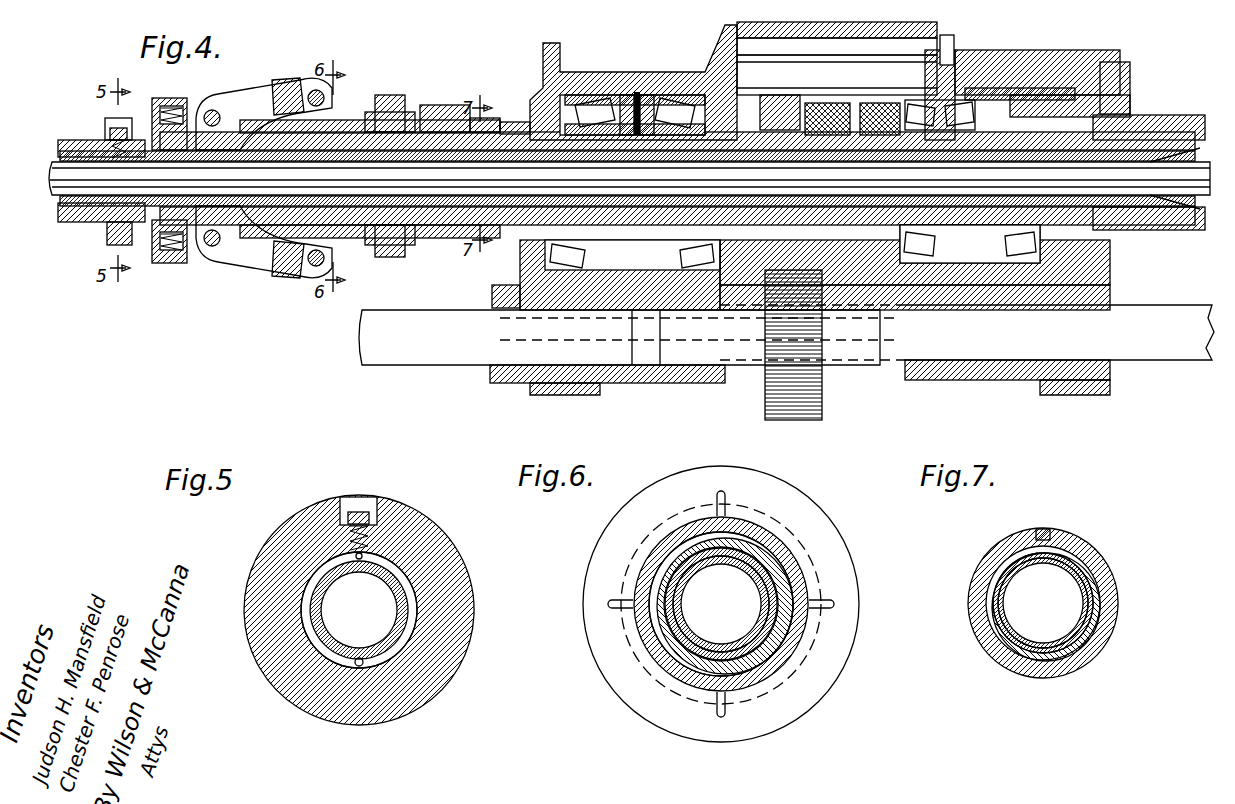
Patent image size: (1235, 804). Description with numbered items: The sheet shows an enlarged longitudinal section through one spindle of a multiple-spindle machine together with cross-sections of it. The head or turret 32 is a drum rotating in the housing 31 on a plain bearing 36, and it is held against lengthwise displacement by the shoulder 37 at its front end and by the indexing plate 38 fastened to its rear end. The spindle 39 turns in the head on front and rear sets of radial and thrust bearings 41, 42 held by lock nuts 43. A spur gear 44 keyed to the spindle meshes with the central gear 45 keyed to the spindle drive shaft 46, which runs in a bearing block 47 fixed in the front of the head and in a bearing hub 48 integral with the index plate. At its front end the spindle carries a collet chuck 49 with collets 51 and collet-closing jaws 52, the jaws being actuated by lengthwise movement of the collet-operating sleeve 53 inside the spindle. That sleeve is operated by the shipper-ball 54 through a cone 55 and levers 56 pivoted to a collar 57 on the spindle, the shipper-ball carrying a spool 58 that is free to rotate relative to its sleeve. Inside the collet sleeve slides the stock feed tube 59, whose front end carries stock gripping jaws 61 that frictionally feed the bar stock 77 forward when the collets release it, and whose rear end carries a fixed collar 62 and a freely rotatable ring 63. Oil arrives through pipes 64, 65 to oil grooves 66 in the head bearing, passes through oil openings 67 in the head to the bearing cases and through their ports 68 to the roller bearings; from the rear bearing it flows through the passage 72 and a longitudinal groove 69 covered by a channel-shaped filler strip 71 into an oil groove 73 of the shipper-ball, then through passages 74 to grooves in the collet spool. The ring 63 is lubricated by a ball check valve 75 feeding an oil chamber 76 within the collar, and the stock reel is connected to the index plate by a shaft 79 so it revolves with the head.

In FIG. 4, the housing 31 is at (1018, 96).
In FIG. 4, the head or turret 32 is at (1028, 100).
In FIG. 4, the plain bearing 36 is at (1010, 58).
In FIG. 4, the shoulder 37 is at (1126, 74).
In FIG. 4, the indexing plate 38 is at (552, 52).
In FIG. 4, the spindle 39 is at (1108, 118).
In FIG. 6, the spindle 39 is at (660, 640).
In FIG. 7, the spindle 39 is at (1112, 614).
In FIG. 4, the front radial and thrust bearings 41 is at (983, 232).
In FIG. 4, the rear radial and thrust bearings 42 is at (738, 118).
In FIG. 4, the lock nuts 43 is at (836, 110).
In FIG. 4, the spur gear 44 is at (792, 94).
In FIG. 4, the central gear 45 is at (814, 416).
In FIG. 4, the spindle drive shaft 46 is at (1172, 340).
In FIG. 4, the bearing block 47 is at (968, 370).
In FIG. 4, the bearing hub 48 is at (678, 368).
In FIG. 4, the collet chuck 49 is at (1188, 236).
In FIG. 4, the collets 51 is at (1172, 214).
In FIG. 4, the collet-closing jaws 52 is at (1182, 118).
In FIG. 4, the collet-operating sleeve 53 is at (250, 135).
In FIG. 6, the collet-operating sleeve 53 is at (688, 622).
In FIG. 7, the collet-operating sleeve 53 is at (1016, 626).
In FIG. 4, the shipper-ball 54 is at (450, 118).
In FIG. 6, the shipper-ball 54 is at (790, 564).
In FIG. 4, the cone 55 is at (302, 240).
In FIG. 4, the levers 56 is at (254, 262).
In FIG. 4, the collar 57 is at (196, 258).
In FIG. 4, the spool 58 is at (370, 232).
In FIG. 6, the spool 58 is at (794, 504).
In FIG. 4, the stock feed tube 59 is at (204, 118).
In FIG. 5, the stock feed tube 59 is at (325, 582).
In FIG. 6, the stock feed tube 59 is at (700, 572).
In FIG. 7, the stock feed tube 59 is at (1016, 586).
In FIG. 4, the stock gripping jaws 61 is at (1112, 214).
In FIG. 4, the fixed collar 62 is at (92, 214).
In FIG. 4, the freely rotatable ring 63 is at (112, 234).
In FIG. 5, the freely rotatable ring 63 is at (456, 570).
In FIG. 4, the oil pipe 64 is at (946, 42).
In FIG. 4, the oil pipe 65 is at (735, 82).
In FIG. 4, the oil grooves 66 is at (648, 100).
In FIG. 4, the oil openings 67 is at (658, 92).
In FIG. 4, the ports 68 is at (600, 94).
In FIG. 4, the longitudinal groove 69 is at (468, 126).
In FIG. 7, the longitudinal groove 69 is at (1060, 542).
In FIG. 4, the filler strip 71 is at (502, 134).
In FIG. 7, the filler strip 71 is at (1043, 528).
In FIG. 4, the passage 72 is at (628, 98).
In FIG. 4, the oil groove 73 is at (422, 122).
In FIG. 6, the oil groove 73 is at (738, 536).
In FIG. 4, the passages 74 is at (382, 108).
In FIG. 4, the ball check valve 75 is at (117, 118).
In FIG. 5, the ball check valve 75 is at (362, 512).
In FIG. 5, the oil chamber 76 is at (316, 578).
In FIG. 4, the bar stock 77 is at (58, 165).
In FIG. 4, the shaft 79 is at (440, 350).